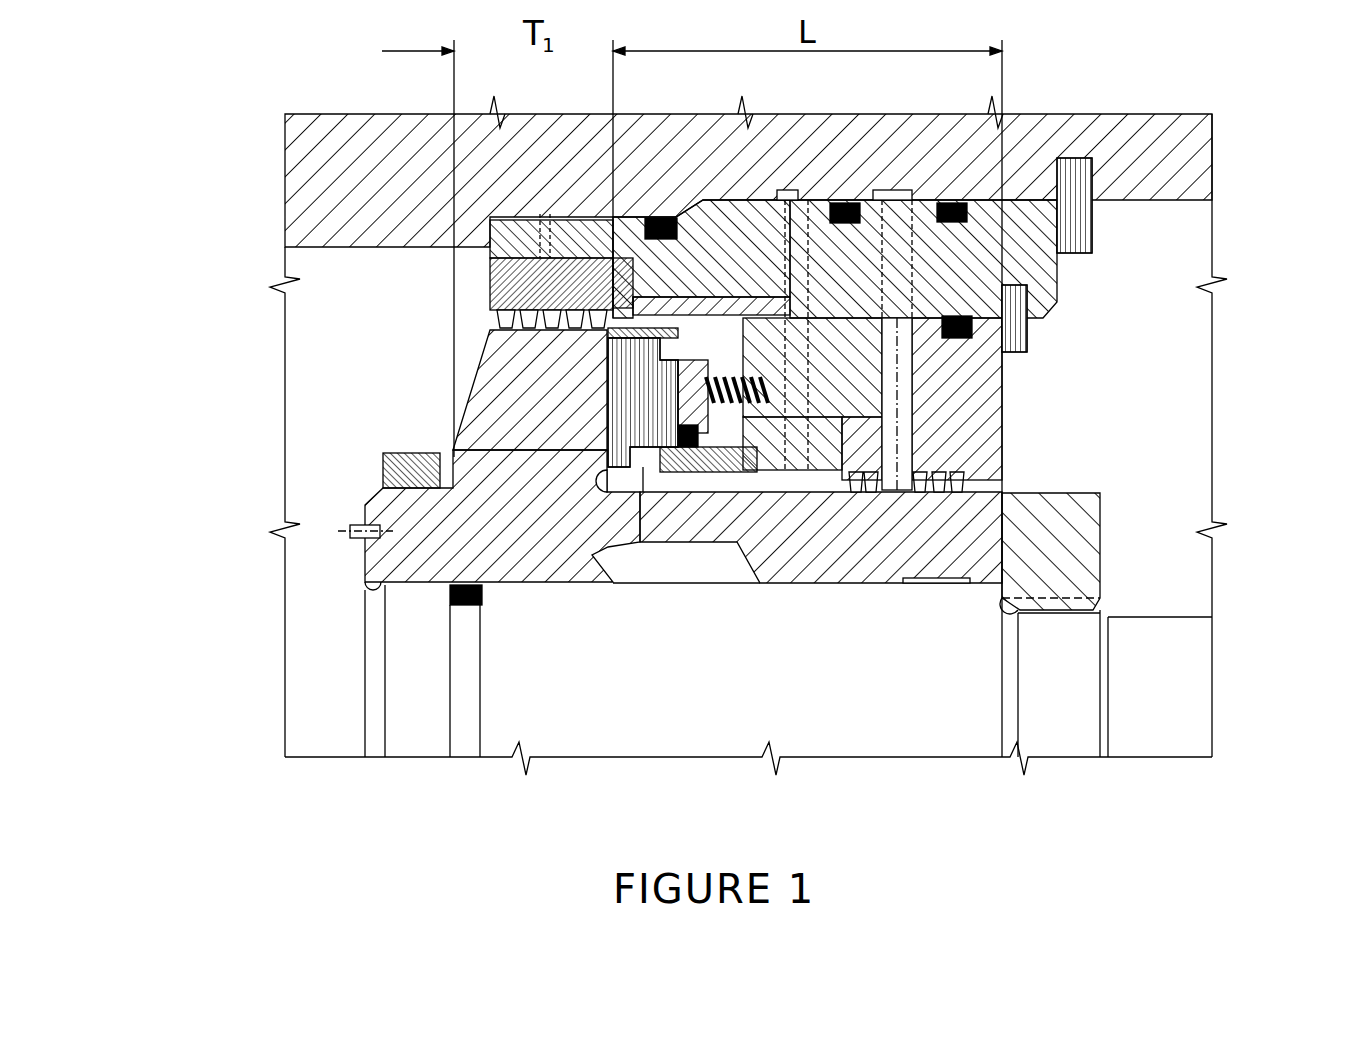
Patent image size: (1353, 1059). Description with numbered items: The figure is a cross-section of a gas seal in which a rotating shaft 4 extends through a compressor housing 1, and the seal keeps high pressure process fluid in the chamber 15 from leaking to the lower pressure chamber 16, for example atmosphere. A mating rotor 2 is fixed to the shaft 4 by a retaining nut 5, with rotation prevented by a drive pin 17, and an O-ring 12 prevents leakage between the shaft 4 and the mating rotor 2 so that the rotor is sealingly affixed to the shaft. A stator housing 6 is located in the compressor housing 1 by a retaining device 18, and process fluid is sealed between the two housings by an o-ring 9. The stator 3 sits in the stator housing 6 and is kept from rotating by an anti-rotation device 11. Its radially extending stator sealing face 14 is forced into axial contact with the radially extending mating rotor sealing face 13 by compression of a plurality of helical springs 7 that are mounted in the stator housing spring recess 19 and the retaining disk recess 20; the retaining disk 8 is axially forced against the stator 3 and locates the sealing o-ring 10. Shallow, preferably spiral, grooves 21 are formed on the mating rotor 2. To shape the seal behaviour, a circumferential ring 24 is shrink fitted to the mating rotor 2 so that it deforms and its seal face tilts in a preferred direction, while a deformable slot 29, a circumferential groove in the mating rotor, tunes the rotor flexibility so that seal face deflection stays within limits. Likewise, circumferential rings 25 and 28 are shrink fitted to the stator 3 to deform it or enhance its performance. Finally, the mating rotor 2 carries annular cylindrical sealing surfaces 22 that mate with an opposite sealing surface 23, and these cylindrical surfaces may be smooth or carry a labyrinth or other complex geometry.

The compressor housing 1 is at (577, 115).
The mating rotor 2 is at (442, 533).
The stator 3 is at (610, 325).
The rotating shaft 4 is at (673, 705).
The retaining nut 5 is at (1077, 557).
The stator housing 6 is at (703, 300).
The helical springs 7 is at (850, 200).
The retaining disk 8 is at (800, 265).
The o-ring 9 is at (617, 328).
The sealing o-ring 10 is at (693, 405).
The anti-rotation device 11 is at (740, 345).
The O-ring 12 is at (477, 610).
The mating rotor sealing face 13 is at (453, 447).
The stator sealing face 14 is at (722, 215).
The chamber 15 is at (353, 340).
The lower pressure chamber 16 is at (1133, 360).
The drive pin 17 is at (357, 528).
The retaining device 18 is at (1068, 220).
The stator housing spring recess 19 is at (790, 415).
The retaining disk recess 20 is at (768, 392).
The grooves 21 is at (500, 232).
The annular cylindrical sealing surfaces 22 is at (495, 335).
The opposite sealing surface 23 is at (495, 320).
The circumferential ring 24 is at (383, 473).
The circumferential ring 25 is at (625, 217).
The circumferential ring 28 is at (643, 467).
The deformable slot 29 is at (700, 567).